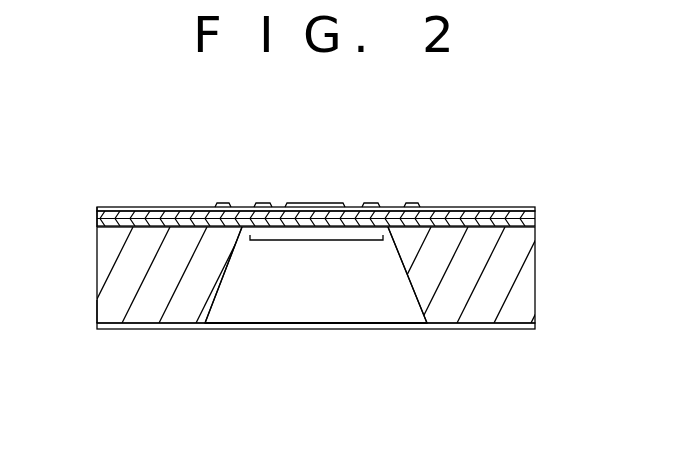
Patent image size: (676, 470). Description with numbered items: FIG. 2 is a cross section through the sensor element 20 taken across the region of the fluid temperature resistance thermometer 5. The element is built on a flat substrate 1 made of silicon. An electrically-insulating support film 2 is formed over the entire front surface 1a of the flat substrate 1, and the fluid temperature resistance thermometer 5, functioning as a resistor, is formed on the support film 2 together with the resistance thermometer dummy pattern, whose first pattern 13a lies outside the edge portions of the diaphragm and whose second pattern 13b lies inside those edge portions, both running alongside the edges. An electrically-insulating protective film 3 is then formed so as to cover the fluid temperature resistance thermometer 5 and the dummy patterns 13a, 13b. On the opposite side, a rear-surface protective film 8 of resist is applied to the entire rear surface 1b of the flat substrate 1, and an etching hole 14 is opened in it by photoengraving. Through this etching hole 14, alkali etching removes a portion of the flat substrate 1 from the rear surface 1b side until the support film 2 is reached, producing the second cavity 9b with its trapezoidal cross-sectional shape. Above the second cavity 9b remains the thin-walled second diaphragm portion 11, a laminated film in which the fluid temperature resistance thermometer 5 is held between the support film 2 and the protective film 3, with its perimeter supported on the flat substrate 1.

The surface acoustic wave device 20 is at (68, 127).
The flat substrate 1 is at (521, 305).
The front surface 1a is at (112, 207).
The rear surface 1b is at (118, 327).
The support film 2 is at (538, 219).
The protective film 3 is at (531, 207).
The fluid temperature resistance thermometer 5 is at (313, 206).
The rear-surface protective film 8 is at (501, 330).
The second cavity 9b is at (252, 306).
The second diaphragm portion 11 is at (316, 256).
The first pattern 13a is at (222, 207).
The second pattern 13b is at (260, 207).
The etching hole 14 is at (376, 330).